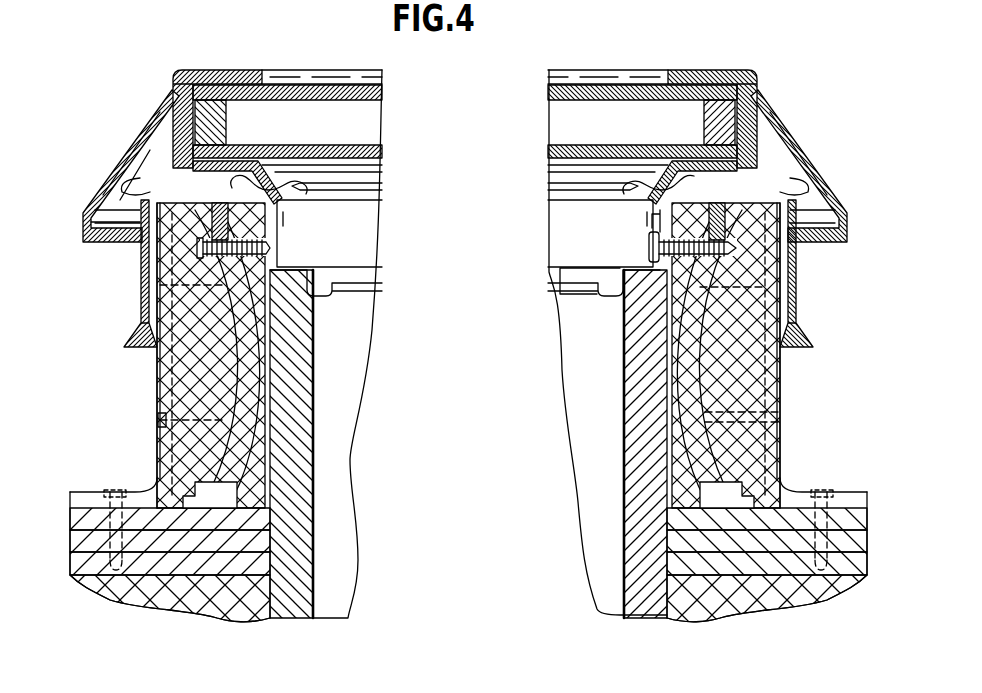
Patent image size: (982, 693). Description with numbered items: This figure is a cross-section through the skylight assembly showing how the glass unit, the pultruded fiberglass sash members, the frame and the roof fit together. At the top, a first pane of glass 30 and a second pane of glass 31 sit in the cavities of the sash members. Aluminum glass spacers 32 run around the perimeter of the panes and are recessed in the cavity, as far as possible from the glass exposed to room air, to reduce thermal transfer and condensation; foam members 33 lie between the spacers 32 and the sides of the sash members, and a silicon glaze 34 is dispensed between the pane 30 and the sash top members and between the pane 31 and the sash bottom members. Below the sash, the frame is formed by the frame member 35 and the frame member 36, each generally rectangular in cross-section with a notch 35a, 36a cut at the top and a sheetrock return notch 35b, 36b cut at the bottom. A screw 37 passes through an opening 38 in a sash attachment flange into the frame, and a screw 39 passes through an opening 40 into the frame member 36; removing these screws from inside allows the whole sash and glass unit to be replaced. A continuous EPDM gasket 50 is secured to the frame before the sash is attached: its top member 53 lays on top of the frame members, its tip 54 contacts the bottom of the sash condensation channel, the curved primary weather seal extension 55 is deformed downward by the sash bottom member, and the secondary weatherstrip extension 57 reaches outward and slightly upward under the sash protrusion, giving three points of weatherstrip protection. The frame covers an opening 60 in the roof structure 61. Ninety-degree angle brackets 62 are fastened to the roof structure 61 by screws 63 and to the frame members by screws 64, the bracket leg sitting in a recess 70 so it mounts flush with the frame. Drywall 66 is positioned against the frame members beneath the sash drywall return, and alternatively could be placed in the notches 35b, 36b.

The first pane of glass 30 is at (328, 82).
The second pane of glass 31 is at (327, 154).
The aluminum glass spacer 32 is at (216, 131).
The foam member 33 is at (175, 110).
The silicon glaze 34 is at (220, 82).
The frame member 35 is at (207, 372).
The notch 35a is at (150, 185).
The sheetrock return notch 35b is at (218, 498).
The frame member 36 is at (750, 466).
The notch 36a is at (797, 182).
The sheetrock return notch 36b is at (719, 492).
The screw 37 is at (279, 250).
The opening 38 is at (216, 258).
The screw 39 is at (649, 248).
The opening 40 is at (655, 223).
The gasket 50 is at (140, 292).
The top member 53 is at (229, 222).
The tip 54 is at (284, 221).
The primary weather seal extension 55 is at (462, 177).
The secondary weatherstrip extension 57 is at (130, 245).
The opening 60 is at (330, 507).
The roof structure 61 is at (254, 571).
The 90° angle bracket 62 is at (90, 492).
The screw 63 is at (128, 479).
The screw 64 is at (158, 420).
The drywall 66 is at (303, 390).
The recess 70 is at (168, 367).